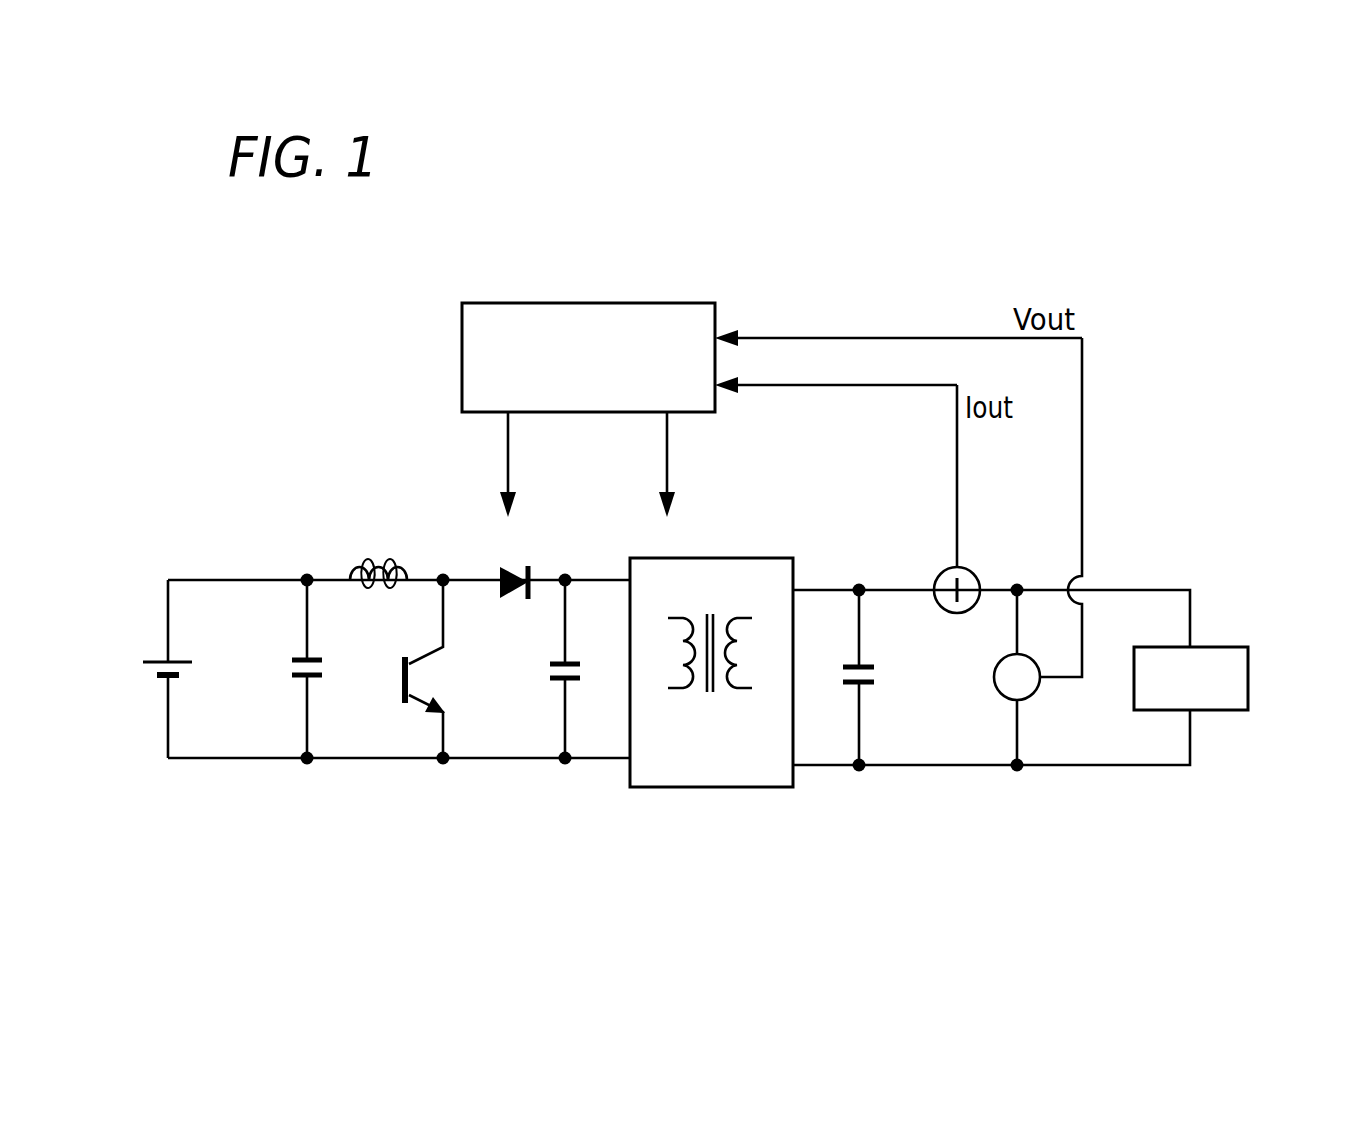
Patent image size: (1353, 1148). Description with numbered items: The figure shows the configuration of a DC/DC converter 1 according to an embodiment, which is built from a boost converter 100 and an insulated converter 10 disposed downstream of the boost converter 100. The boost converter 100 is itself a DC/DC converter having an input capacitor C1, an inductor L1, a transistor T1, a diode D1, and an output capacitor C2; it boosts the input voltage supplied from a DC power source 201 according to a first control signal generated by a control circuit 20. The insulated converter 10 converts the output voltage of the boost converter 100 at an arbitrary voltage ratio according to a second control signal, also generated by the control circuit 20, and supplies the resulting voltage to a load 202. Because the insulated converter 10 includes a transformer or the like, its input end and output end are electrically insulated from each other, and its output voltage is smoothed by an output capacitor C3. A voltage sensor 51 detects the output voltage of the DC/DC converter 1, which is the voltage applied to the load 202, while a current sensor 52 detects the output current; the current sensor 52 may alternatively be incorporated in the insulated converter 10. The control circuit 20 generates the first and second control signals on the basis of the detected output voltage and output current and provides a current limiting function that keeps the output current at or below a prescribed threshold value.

The DC/DC converter 1 is at (293, 413).
The control circuit 20 is at (462, 353).
The DC power source 201 is at (150, 680).
The load 202 is at (1248, 677).
The boost converter 100 is at (578, 785).
The insulated converter 10 is at (703, 795).
The voltage sensor 51 is at (1040, 690).
The current sensor 52 is at (955, 613).
The input capacitor C1 is at (295, 669).
The inductor L1 is at (378, 557).
The transistor T1 is at (417, 669).
The diode D1 is at (515, 564).
The output capacitor C2 is at (550, 669).
The output capacitor C3 is at (874, 677).